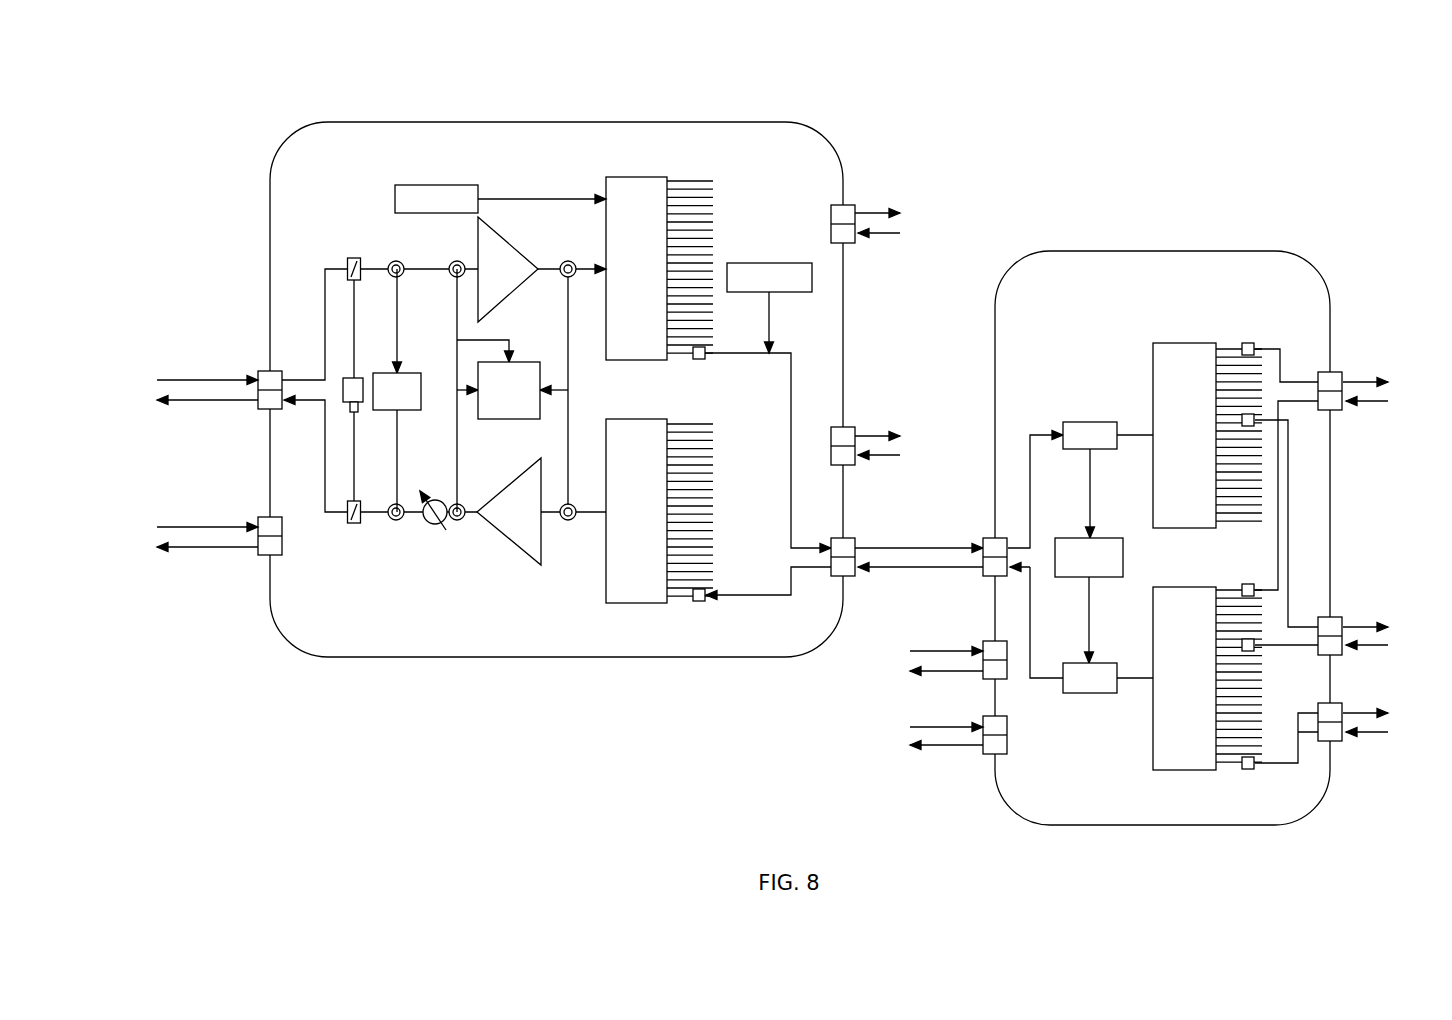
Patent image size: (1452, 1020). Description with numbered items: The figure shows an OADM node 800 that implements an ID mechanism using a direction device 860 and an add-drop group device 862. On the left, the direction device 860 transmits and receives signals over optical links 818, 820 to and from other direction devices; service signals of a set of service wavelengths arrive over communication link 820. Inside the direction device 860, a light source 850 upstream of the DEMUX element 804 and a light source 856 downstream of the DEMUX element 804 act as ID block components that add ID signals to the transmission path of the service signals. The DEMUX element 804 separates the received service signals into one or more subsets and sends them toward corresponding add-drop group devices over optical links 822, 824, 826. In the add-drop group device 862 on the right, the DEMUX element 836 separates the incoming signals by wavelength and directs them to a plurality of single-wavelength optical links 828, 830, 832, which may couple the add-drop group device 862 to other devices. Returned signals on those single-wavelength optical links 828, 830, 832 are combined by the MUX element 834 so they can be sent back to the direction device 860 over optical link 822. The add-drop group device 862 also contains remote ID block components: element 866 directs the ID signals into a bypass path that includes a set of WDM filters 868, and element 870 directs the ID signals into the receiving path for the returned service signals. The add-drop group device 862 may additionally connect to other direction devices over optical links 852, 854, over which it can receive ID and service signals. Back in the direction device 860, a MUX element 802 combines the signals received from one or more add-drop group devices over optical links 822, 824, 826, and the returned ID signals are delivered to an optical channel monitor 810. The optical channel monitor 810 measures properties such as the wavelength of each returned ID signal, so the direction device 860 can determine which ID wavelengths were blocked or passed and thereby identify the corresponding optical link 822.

The OADM node 800 is at (245, 63).
The MUX element 802 is at (606, 596).
The DEMUX element 804 is at (606, 246).
The optical channel monitor 810 is at (525, 361).
The optical link 818 is at (147, 538).
The communication link 820 is at (147, 391).
The optical link 822 is at (855, 533).
The optical link 824 is at (909, 446).
The optical link 826 is at (909, 224).
The single-wavelength optical link 828 is at (1396, 722).
The single-wavelength optical link 830 is at (1396, 636).
The single-wavelength optical link 832 is at (1396, 391).
The MUX element 834 is at (1153, 762).
The DEMUX element 836 is at (1153, 352).
The light source 850 is at (446, 183).
The optical link 852 is at (903, 662).
The optical link 854 is at (903, 737).
The light source 856 is at (768, 263).
The direction device 860 is at (557, 122).
The add-drop group device 862 is at (1160, 250).
The element 866 is at (1090, 420).
The WDM filters 868 is at (1066, 538).
The element 870 is at (1073, 694).